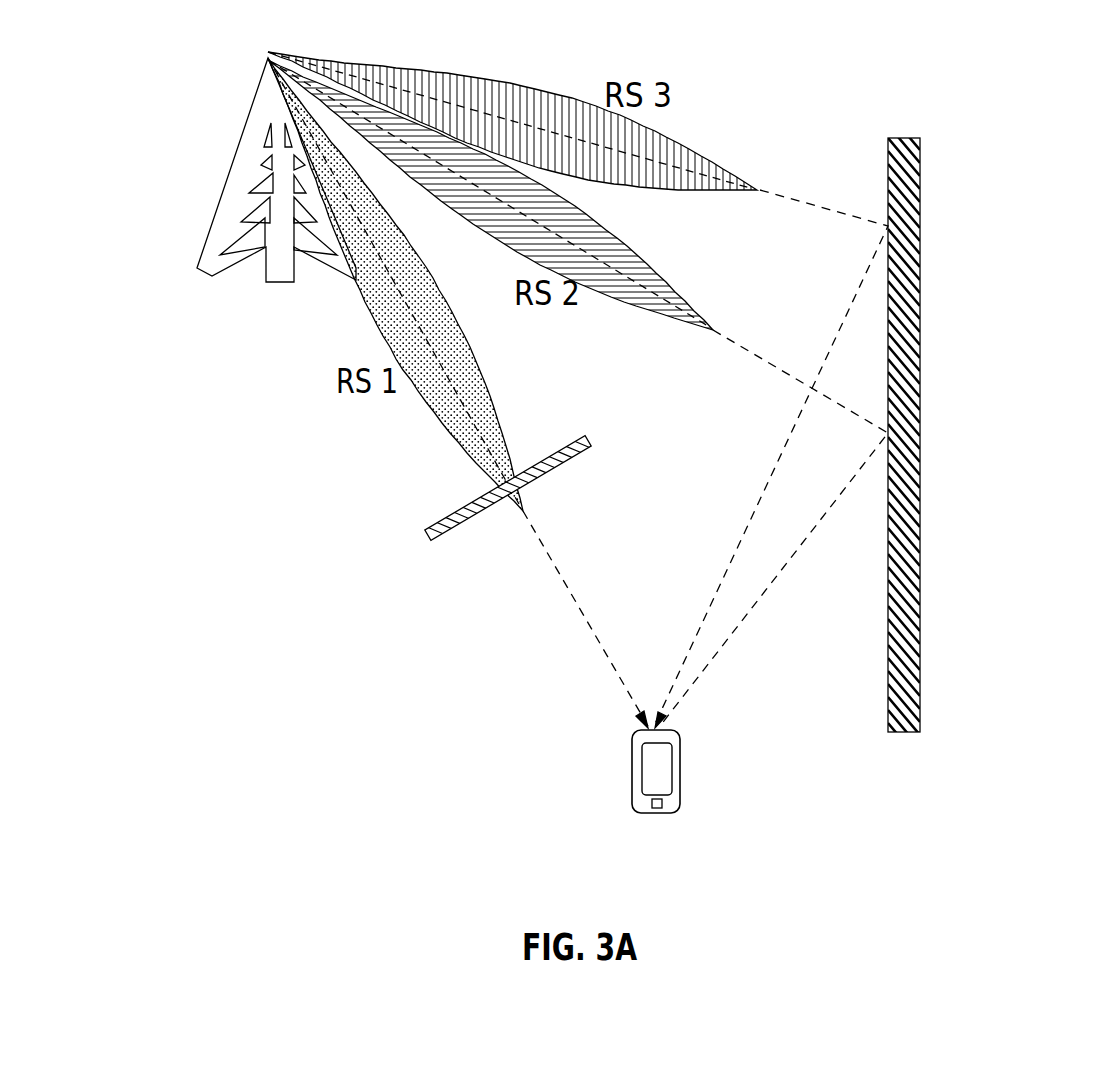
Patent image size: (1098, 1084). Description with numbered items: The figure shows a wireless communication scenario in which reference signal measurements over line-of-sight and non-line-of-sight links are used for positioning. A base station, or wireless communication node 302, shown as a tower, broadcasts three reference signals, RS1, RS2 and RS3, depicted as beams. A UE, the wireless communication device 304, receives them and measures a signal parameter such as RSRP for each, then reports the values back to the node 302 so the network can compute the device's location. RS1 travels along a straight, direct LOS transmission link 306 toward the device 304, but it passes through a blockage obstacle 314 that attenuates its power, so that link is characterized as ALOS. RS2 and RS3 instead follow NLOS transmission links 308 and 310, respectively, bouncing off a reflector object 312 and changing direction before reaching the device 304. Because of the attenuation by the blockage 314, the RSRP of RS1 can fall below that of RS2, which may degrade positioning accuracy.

The wireless communication node 302 is at (260, 138).
The wireless communication device 304 is at (630, 758).
The LOS transmission/communication link 306 is at (553, 557).
The NLOS transmission/communication link 308 is at (775, 362).
The NLOS transmission/communication link 310 is at (847, 218).
The reflector object 312 is at (921, 197).
The blockage obstacle 314 is at (542, 455).